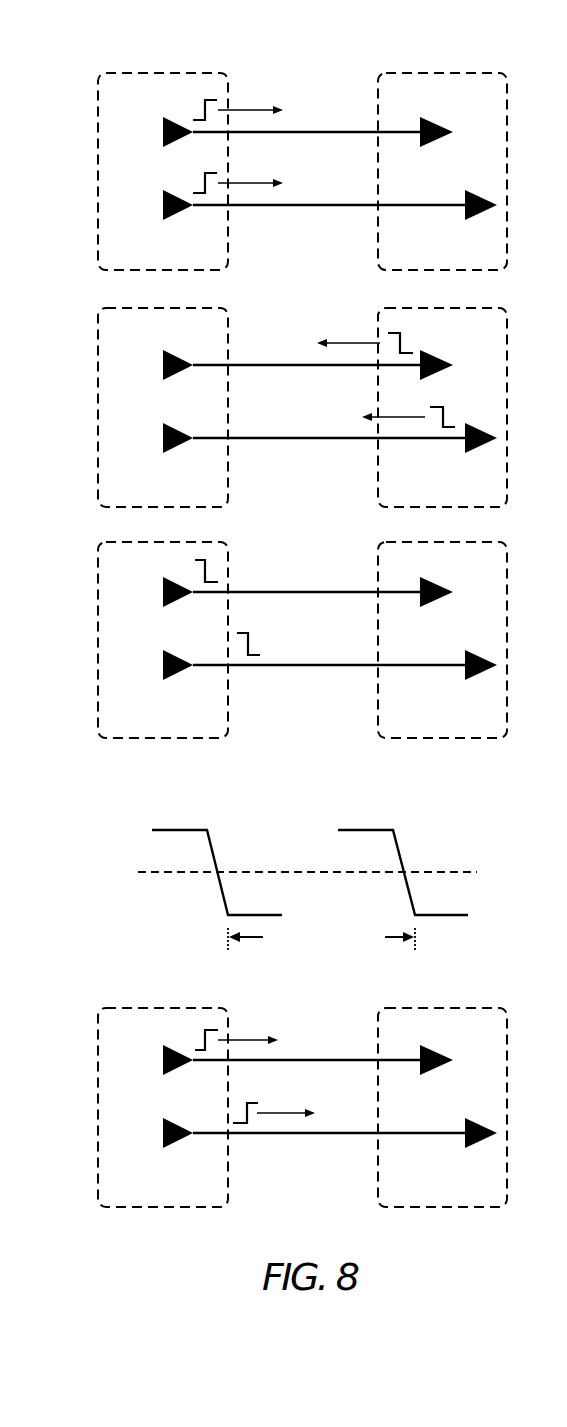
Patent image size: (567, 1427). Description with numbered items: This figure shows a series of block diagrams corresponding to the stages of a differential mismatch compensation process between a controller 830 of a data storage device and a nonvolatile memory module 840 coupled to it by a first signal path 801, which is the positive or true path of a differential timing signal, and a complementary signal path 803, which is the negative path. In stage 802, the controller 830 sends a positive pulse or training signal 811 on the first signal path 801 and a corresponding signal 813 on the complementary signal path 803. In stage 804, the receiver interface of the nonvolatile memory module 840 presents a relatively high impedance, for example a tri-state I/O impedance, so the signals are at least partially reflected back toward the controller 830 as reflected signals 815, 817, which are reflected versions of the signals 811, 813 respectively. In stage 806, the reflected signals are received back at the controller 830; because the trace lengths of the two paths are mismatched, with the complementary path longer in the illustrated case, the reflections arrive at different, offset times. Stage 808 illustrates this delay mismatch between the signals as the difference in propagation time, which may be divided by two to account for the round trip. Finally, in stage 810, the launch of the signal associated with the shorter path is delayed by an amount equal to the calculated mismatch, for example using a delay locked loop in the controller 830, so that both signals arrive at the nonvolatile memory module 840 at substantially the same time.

The first signal path 801 is at (313, 132).
The stage 802 is at (44, 190).
The complementary signal path 803 is at (313, 205).
The stage 804 is at (44, 408).
The stage 806 is at (44, 643).
The stage 808 is at (44, 866).
The stage 810 is at (44, 1111).
The signal 811 is at (188, 108).
The signal 813 is at (188, 181).
The reflected signal 815 is at (416, 338).
The reflected signal 817 is at (460, 411).
The controller 830 is at (163, 73).
The nonvolatile memory module 840 is at (443, 73).